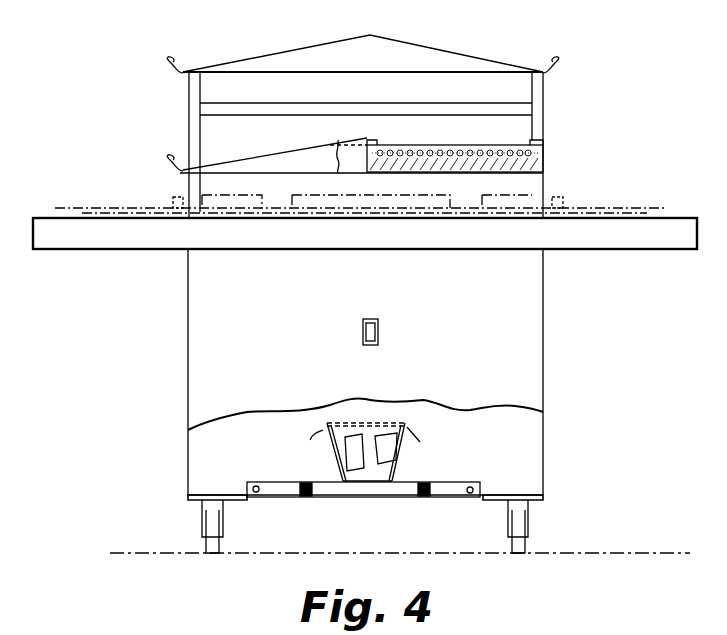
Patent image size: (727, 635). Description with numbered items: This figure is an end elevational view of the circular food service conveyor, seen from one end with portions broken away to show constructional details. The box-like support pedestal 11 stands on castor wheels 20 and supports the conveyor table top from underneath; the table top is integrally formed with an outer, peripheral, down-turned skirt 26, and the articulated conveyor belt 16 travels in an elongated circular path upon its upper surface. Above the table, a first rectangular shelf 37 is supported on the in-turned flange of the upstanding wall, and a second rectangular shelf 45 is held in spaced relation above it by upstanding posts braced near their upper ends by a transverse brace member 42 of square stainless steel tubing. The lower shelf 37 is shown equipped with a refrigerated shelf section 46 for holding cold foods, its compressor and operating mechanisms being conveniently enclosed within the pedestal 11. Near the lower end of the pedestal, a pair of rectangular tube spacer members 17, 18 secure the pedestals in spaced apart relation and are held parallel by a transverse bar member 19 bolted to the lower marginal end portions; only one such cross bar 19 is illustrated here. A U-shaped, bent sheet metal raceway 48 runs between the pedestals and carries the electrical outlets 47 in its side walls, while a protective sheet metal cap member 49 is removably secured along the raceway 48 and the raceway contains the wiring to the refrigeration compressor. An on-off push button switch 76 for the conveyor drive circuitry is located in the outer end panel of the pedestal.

The box-like support pedestal 11 is at (548, 331).
The articulated conveyor belt 16 is at (140, 203).
The rectangular tube spacer member 17 is at (307, 497).
The rectangular tube spacer member 18 is at (431, 497).
The transverse bar member 19 is at (281, 491).
The castor wheel 20 is at (530, 549).
The down-turned skirt 26 is at (122, 242).
The first rectangular shelf 37 is at (262, 152).
The transverse brace member 42 is at (318, 93).
The second rectangular shelf 45 is at (290, 44).
The refrigerated shelf section 46 is at (456, 142).
The electrical outlet 47 is at (340, 453).
The sheet metal raceway 48 is at (377, 494).
The protective sheet metal cap member 49 is at (392, 423).
The on-off push button switch 76 is at (379, 332).